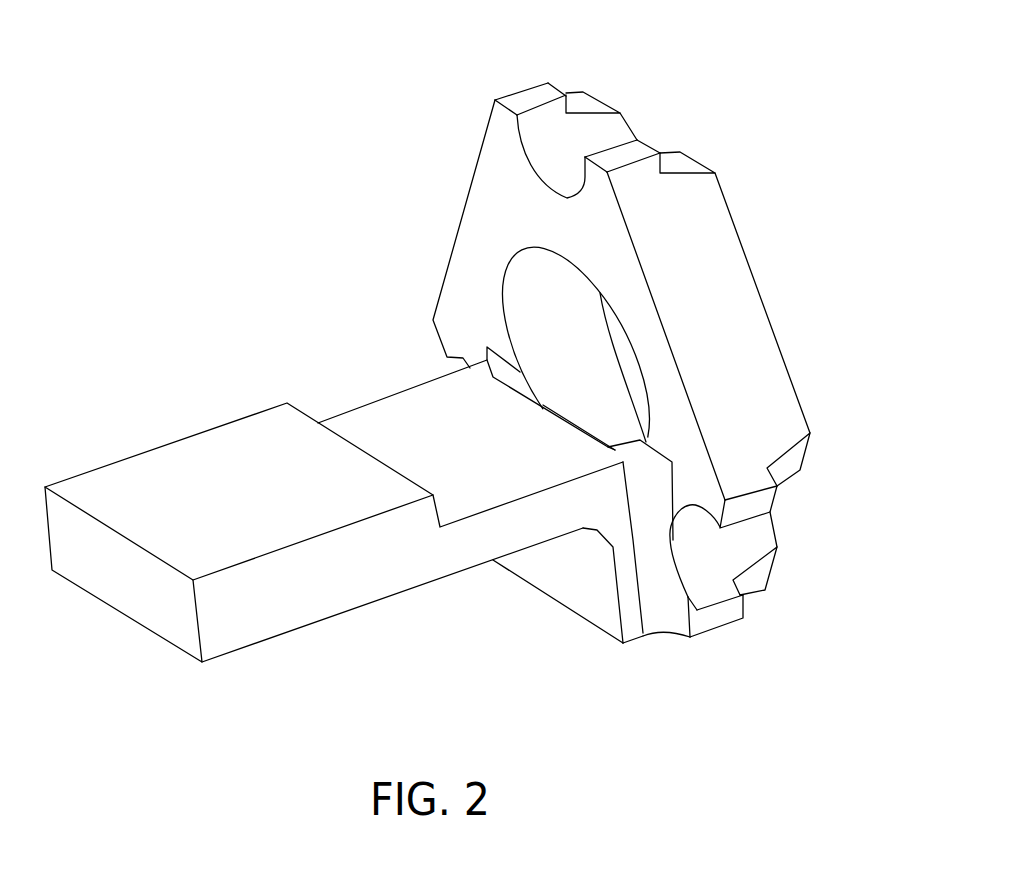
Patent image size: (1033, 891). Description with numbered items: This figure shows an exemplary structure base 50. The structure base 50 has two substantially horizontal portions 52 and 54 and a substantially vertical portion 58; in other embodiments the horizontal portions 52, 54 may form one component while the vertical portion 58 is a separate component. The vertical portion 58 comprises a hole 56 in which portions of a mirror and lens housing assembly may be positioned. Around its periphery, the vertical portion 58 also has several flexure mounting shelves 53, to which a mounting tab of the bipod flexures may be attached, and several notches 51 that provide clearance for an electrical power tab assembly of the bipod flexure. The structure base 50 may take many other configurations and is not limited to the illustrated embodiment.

The structure base 50 is at (238, 112).
The notch 51 is at (563, 135).
The horizontal portion 52 is at (293, 545).
The flexure mounting shelf 53 is at (607, 103).
The horizontal portion 54 is at (488, 508).
The hole 56 is at (523, 310).
The vertical portion 58 is at (742, 238).